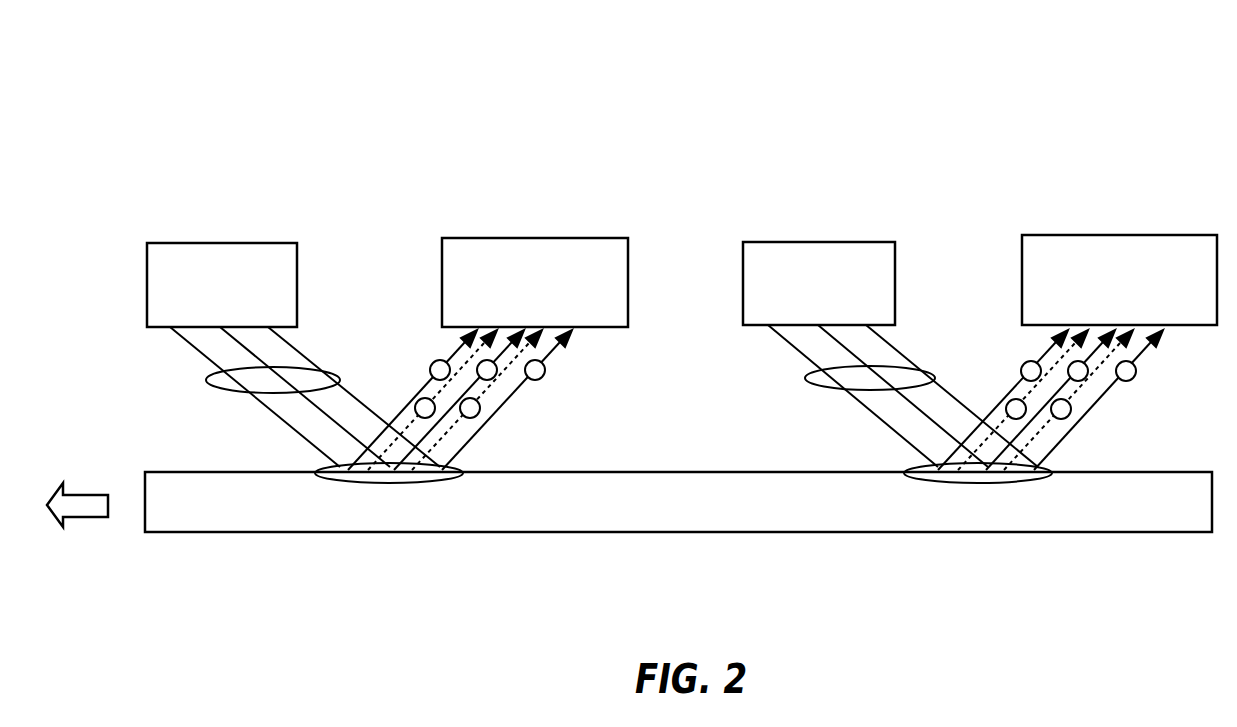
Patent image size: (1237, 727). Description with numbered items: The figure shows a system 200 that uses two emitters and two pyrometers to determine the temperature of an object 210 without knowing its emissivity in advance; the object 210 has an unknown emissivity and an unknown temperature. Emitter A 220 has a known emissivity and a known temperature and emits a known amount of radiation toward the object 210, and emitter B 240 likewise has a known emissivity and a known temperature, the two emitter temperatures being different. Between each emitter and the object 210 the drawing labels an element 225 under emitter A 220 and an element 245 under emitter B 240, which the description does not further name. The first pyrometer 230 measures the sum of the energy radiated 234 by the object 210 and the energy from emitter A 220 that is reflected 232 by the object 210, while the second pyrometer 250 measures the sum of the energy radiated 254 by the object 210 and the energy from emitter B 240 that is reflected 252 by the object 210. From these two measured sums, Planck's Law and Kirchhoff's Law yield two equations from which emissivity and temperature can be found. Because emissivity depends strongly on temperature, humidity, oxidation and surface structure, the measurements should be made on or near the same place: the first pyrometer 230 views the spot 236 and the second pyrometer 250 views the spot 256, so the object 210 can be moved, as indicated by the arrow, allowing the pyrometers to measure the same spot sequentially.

The system 200 is at (250, 32).
The object 210 is at (170, 472).
The emitter A 220 is at (218, 243).
The lens of emitter A 225 is at (207, 379).
The pyrometer 1 230 is at (552, 238).
The reflected energy from emitter A 232 is at (530, 362).
The energy radiated by the object 234 is at (426, 418).
The spot 236 is at (318, 470).
The emitter B 240 is at (815, 242).
The lens of emitter B 245 is at (805, 378).
The pyrometer 2 250 is at (1148, 235).
The reflected energy from emitter B 252 is at (1120, 364).
The energy radiated by the object 254 is at (1016, 421).
The spot 256 is at (908, 470).